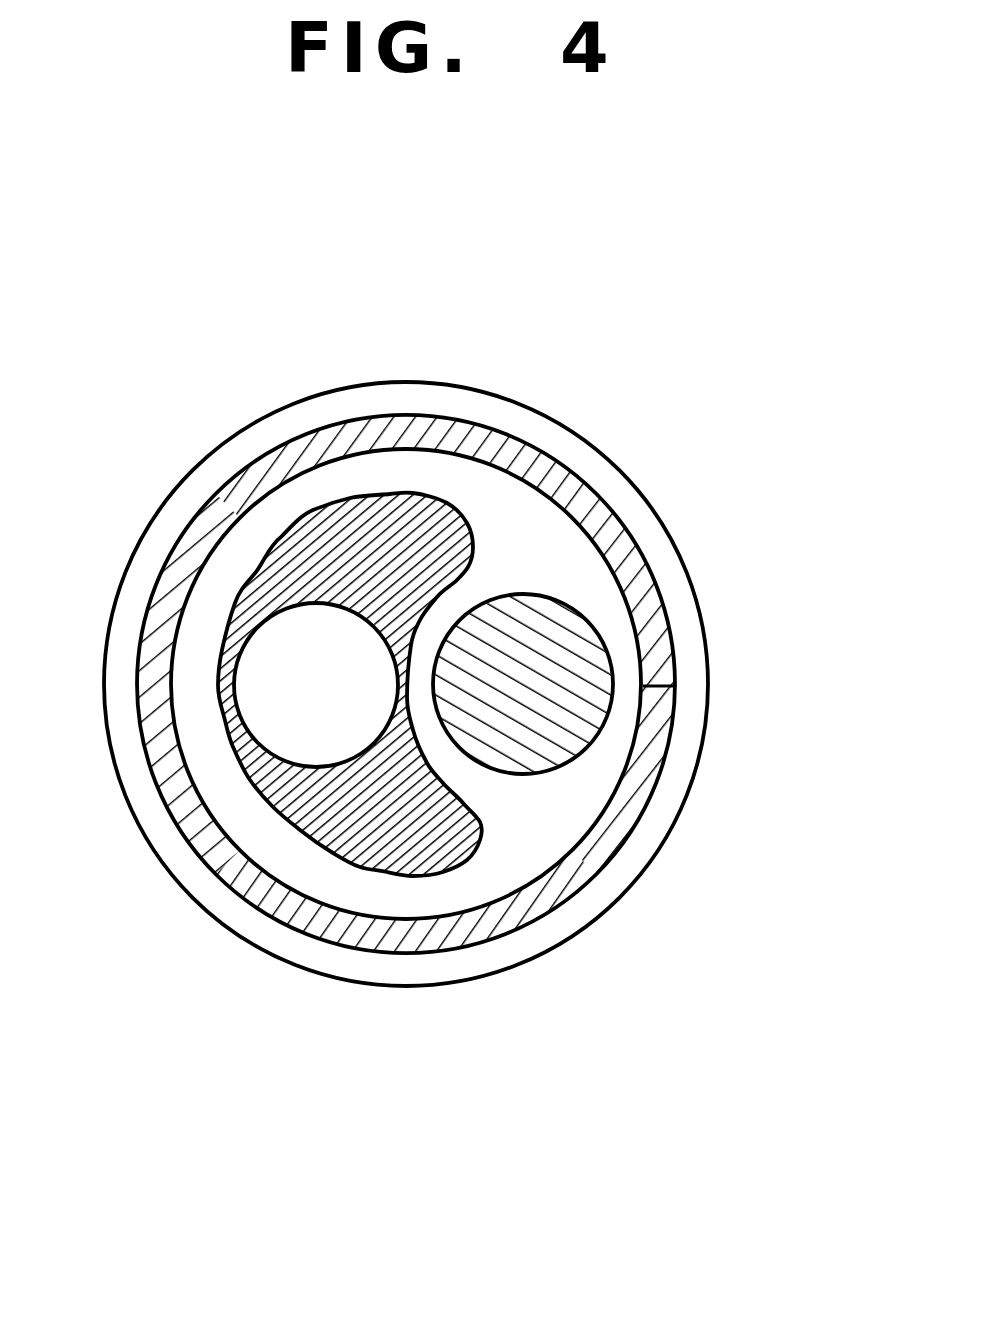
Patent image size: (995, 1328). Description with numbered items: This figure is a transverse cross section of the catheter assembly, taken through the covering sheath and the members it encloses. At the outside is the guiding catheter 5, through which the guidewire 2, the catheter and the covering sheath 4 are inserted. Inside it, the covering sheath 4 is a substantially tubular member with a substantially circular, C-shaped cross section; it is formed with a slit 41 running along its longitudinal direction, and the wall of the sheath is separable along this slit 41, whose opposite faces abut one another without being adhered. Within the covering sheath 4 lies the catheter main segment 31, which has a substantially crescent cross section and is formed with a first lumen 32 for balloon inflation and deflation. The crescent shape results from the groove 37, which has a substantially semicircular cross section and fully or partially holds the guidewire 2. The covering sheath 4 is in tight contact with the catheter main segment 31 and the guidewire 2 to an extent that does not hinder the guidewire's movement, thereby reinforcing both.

The guidewire 2 is at (552, 652).
The covering sheath 4 is at (557, 910).
The guiding catheter 5 is at (456, 384).
The catheter main segment 31 is at (395, 873).
The first lumen 32 is at (302, 702).
The groove 37 is at (417, 643).
The slit 41 is at (662, 690).